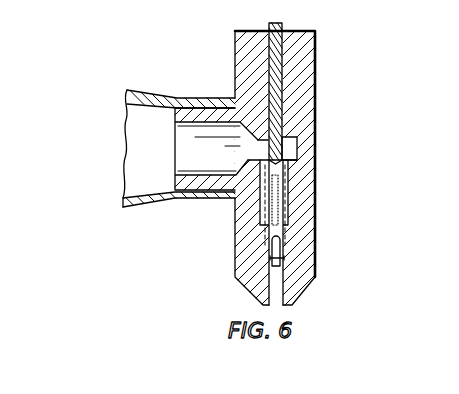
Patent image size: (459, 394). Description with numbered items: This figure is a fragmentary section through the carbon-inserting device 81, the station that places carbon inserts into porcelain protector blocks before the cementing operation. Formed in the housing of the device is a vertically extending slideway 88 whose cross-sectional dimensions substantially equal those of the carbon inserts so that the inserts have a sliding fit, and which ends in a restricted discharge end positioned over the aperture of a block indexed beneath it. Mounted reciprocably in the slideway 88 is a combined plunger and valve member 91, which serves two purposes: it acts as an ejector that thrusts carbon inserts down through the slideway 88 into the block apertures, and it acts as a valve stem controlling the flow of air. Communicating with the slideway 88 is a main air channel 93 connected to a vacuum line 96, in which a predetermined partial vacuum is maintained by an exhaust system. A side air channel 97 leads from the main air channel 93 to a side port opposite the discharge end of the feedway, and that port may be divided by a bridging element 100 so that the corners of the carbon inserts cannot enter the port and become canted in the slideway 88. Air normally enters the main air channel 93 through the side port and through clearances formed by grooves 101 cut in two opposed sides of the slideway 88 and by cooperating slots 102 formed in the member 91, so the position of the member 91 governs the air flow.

The carbon-inserting device 81 is at (339, 93).
The combined plunger and valve member 91 is at (272, 20).
The vacuum line 96 is at (171, 97).
The main air channel 93 is at (222, 168).
The side air channel 97 is at (287, 178).
The grooves 101 is at (283, 222).
The slots 102 is at (262, 203).
The slideway 88 is at (283, 257).
The bridging element 100 is at (281, 268).